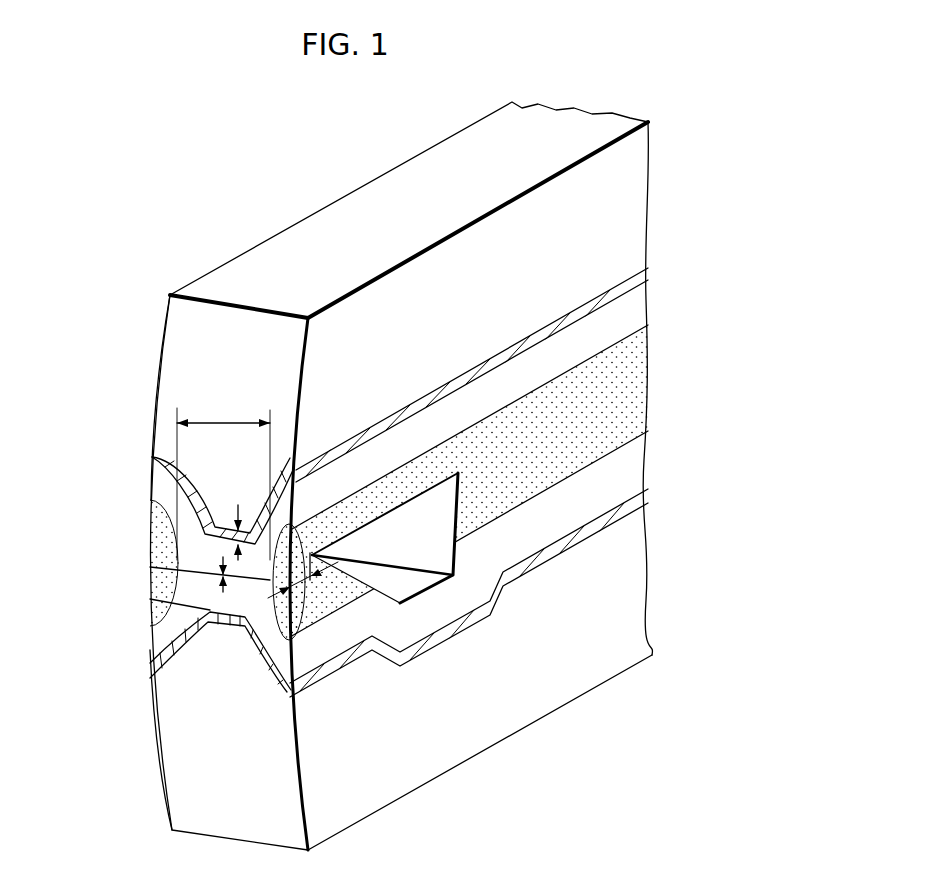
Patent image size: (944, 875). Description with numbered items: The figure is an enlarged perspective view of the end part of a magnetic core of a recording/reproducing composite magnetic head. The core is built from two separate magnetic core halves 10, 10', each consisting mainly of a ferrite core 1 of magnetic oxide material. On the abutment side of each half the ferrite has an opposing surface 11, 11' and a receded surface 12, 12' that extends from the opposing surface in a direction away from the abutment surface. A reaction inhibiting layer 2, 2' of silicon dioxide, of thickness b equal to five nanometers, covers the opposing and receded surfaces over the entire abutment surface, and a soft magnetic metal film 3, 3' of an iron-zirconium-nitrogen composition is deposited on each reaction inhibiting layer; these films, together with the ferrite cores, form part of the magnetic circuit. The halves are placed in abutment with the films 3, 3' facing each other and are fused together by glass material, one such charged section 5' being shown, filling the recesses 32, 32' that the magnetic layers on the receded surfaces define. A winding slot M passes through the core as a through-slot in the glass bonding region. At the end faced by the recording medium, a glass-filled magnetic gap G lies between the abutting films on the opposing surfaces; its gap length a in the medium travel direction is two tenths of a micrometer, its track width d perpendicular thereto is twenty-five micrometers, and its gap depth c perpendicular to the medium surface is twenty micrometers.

The ferrite core 1 is at (185, 320).
The reaction inhibiting layer 2 is at (487, 368).
The soft magnetic metal film 3 is at (487, 381).
The recess 32 is at (491, 481).
The recess 32' is at (493, 521).
The soft magnetic metal film 3' is at (655, 455).
The reaction inhibiting layer 2' is at (486, 586).
The magnetic core half 10 is at (107, 397).
The magnetic core half 10' is at (113, 740).
The receded surface 12 is at (223, 477).
The receded surface 12' is at (194, 670).
The charged section of fused glass material 5' is at (203, 570).
The opposing surface 11 is at (194, 508).
The opposing surface 11' is at (192, 644).
The magnetic gap G is at (190, 582).
The winding slot M is at (428, 552).
The gap length a is at (234, 583).
The thickness b is at (238, 517).
The gap depth c is at (298, 597).
The track width d is at (223, 479).